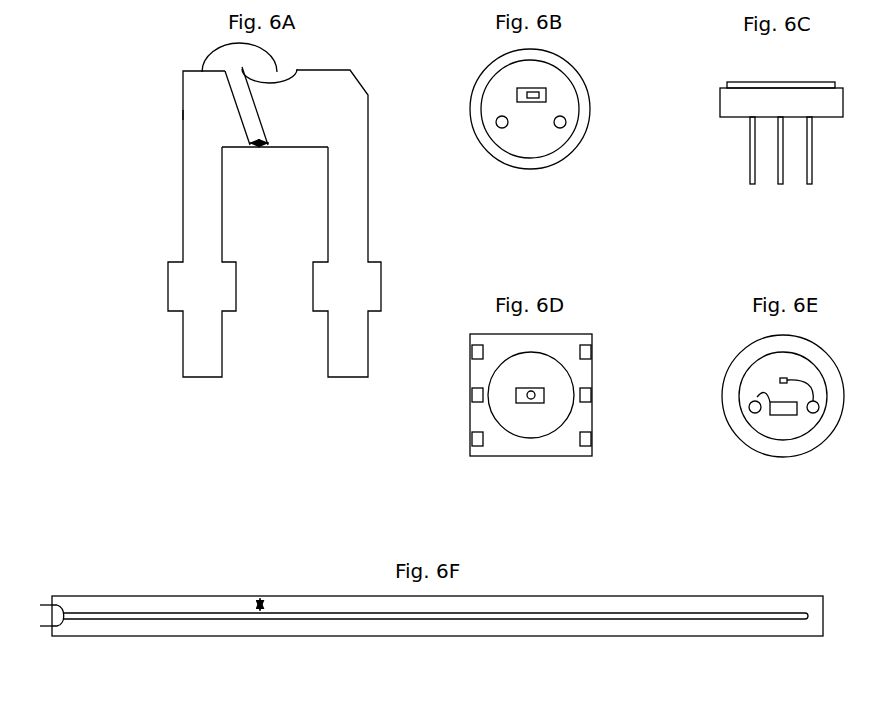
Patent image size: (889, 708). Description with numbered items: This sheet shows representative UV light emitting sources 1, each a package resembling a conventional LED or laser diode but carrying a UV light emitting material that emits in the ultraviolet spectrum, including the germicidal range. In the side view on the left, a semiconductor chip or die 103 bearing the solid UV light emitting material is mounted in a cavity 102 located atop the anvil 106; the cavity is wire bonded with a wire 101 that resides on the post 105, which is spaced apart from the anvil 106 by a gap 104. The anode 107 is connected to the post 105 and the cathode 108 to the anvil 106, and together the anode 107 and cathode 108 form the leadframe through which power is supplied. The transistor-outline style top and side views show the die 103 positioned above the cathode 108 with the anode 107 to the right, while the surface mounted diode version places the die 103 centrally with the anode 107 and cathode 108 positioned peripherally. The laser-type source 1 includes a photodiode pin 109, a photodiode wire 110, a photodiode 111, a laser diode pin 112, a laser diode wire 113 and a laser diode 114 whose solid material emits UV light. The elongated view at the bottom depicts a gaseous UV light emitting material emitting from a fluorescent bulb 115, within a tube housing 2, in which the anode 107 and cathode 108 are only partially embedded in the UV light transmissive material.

In FIG. 6A, the UV light emitting source 1 is at (147, 331).
In FIG. 6B, the UV light emitting source 1 is at (598, 88).
In FIG. 6C, the UV light emitting source 1 is at (720, 126).
In FIG. 6D, the UV light emitting source 1 is at (432, 440).
In FIG. 6E, the UV light emitting source 1 is at (725, 347).
In FIG. 6F, the UV light emitting source 1 is at (571, 612).
In FIG. 6F, the tube housing 2 is at (298, 589).
In FIG. 6A, the wire 101 is at (212, 50).
In FIG. 6A, the cavity 102 is at (246, 68).
In FIG. 6A, the semiconductor chip or die 103 is at (268, 82).
In FIG. 6B, the semiconductor chip or die 103 is at (526, 95).
In FIG. 6D, the semiconductor chip or die 103 is at (531, 403).
In FIG. 6A, the gap 104 is at (258, 146).
In FIG. 6A, the post 105 is at (201, 124).
In FIG. 6A, the anvil 106 is at (281, 130).
In FIG. 6A, the anode 107 is at (202, 271).
In FIG. 6B, the anode 107 is at (560, 130).
In FIG. 6C, the anode 107 is at (810, 189).
In FIG. 6D, the anode 107 is at (478, 395).
In FIG. 6F, the anode 107 is at (42, 600).
In FIG. 6A, the cathode 108 is at (347, 271).
In FIG. 6B, the cathode 108 is at (530, 105).
In FIG. 6C, the cathode 108 is at (781, 189).
In FIG. 6D, the cathode 108 is at (585, 395).
In FIG. 6F, the cathode 108 is at (42, 631).
In FIG. 6E, the photodiode pin 109 is at (755, 414).
In FIG. 6E, the photodiode wire 110 is at (755, 396).
In FIG. 6E, the photodiode 111 is at (785, 416).
In FIG. 6E, the laser diode pin 112 is at (813, 414).
In FIG. 6E, the laser diode wire 113 is at (815, 387).
In FIG. 6E, the laser diode 114 is at (779, 380).
In FIG. 6F, the fluorescent bulb 115 is at (430, 621).